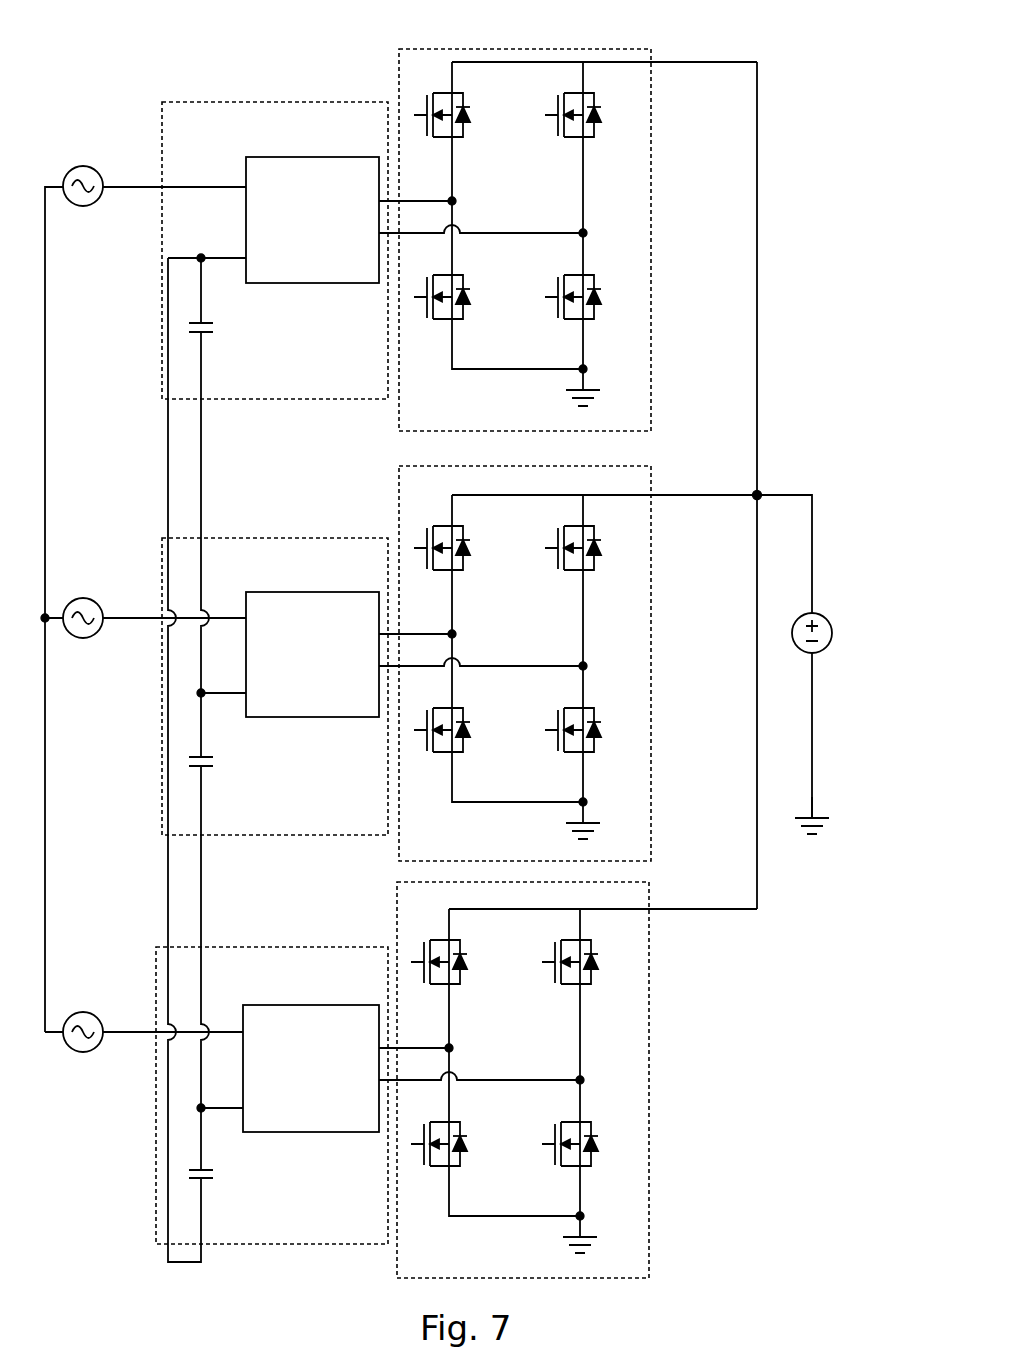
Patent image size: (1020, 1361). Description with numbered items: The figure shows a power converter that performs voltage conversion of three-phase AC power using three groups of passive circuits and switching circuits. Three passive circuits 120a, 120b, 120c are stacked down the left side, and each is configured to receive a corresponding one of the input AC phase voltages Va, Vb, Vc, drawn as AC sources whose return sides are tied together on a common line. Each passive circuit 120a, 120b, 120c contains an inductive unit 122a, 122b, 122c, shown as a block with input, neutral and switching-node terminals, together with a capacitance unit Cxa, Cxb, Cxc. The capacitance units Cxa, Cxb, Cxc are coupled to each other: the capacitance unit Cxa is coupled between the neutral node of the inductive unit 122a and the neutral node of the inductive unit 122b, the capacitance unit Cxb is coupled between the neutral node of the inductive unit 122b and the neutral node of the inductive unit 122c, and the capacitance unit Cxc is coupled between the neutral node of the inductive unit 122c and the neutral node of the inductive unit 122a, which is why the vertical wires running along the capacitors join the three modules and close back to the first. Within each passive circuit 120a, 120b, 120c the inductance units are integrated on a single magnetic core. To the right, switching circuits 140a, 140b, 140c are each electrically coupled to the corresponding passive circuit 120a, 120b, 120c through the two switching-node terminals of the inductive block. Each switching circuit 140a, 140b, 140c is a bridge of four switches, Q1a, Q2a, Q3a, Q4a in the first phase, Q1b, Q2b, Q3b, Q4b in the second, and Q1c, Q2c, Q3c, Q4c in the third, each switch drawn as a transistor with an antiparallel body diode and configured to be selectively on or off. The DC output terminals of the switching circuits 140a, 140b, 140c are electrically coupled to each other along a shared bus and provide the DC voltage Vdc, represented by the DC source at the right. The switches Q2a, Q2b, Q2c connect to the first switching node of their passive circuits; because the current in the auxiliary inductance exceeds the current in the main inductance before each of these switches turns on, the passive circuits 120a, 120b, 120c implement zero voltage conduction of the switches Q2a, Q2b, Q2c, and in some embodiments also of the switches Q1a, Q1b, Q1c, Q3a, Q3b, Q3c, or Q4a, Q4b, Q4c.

The passive circuit 120a is at (336, 102).
The inductive unit 122a is at (330, 157).
The switching circuit 140a is at (651, 358).
The passive circuit 120b is at (336, 538).
The inductive unit 122b is at (330, 592).
The switching circuit 140b is at (580, 663).
The passive circuit 120c is at (336, 947).
The inductive unit 122c is at (330, 1005).
The switching circuit 140c is at (577, 1080).
The input AC phase voltage Va is at (145, 209).
The input AC phase voltage Vb is at (145, 641).
The input AC phase voltage Vc is at (144, 1007).
The capacitance unit Cxa is at (207, 334).
The capacitance unit Cxb is at (207, 768).
The capacitance unit Cxc is at (207, 1180).
The DC voltage Vdc is at (836, 633).
The switch Q1a is at (466, 120).
The switch Q2a is at (466, 302).
The switch Q3a is at (597, 120).
The switch Q4a is at (597, 302).
The switch Q1b is at (466, 553).
The switch Q2b is at (466, 735).
The switch Q3b is at (597, 553).
The switch Q4b is at (597, 735).
The switch Q1c is at (462, 967).
The switch Q2c is at (462, 1149).
The switch Q3c is at (593, 967).
The switch Q4c is at (593, 1149).